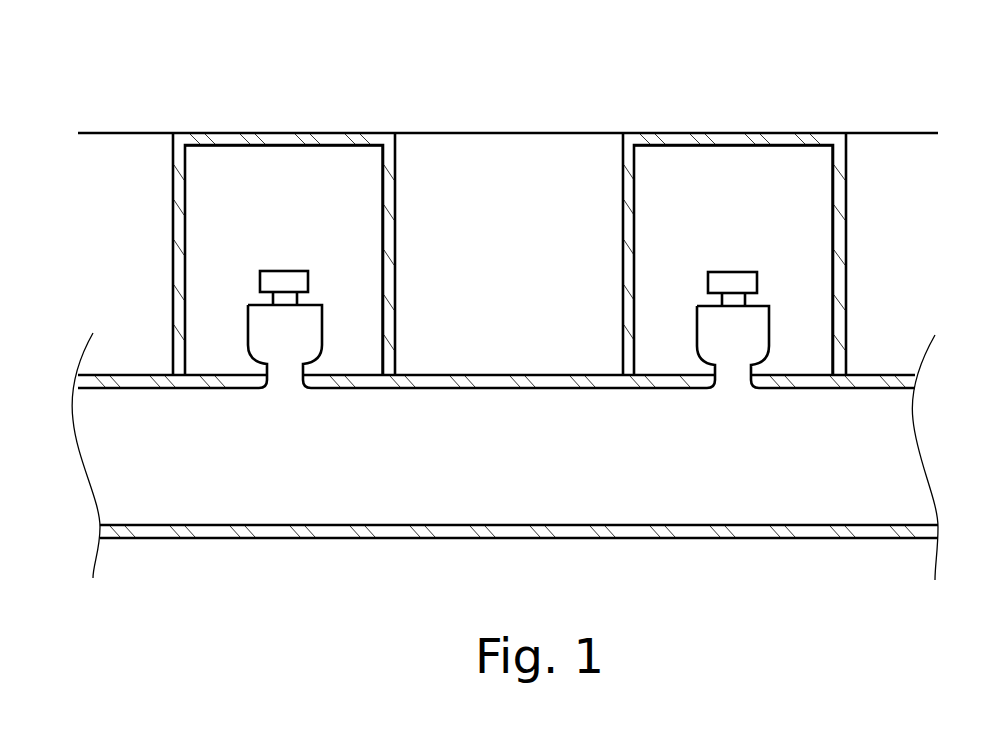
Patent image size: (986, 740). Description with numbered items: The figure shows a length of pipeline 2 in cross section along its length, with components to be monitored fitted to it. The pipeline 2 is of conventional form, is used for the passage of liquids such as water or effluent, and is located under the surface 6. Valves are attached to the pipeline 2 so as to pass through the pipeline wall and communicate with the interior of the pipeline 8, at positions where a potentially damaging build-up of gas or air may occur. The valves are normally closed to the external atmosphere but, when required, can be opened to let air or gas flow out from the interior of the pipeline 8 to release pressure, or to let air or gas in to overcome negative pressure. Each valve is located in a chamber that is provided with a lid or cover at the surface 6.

The pipeline 2 is at (498, 375).
The surface 6 is at (913, 132).
The interior of the pipeline 8 is at (634, 538).